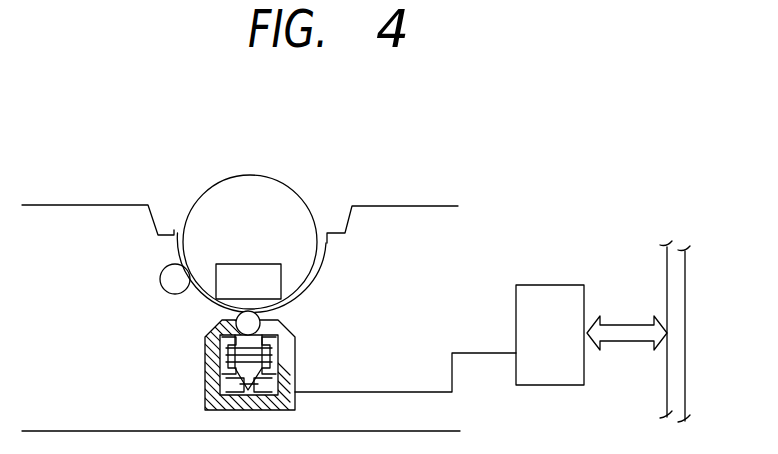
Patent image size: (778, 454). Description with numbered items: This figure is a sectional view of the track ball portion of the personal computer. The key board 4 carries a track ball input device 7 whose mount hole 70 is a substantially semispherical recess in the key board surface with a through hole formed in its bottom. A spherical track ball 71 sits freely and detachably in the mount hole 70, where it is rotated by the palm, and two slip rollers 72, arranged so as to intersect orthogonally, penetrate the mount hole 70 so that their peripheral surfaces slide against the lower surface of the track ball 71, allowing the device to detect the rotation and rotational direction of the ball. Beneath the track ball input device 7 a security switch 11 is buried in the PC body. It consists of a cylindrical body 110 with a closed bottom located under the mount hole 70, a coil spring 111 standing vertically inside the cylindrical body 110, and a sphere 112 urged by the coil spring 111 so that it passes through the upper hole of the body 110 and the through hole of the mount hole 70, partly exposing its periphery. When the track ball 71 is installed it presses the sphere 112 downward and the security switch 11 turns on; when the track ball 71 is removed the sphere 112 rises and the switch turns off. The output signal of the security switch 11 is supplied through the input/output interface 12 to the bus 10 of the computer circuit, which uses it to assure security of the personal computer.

The key board 4 is at (430, 206).
The track ball input device 7 is at (273, 196).
The mount hole 70 is at (178, 233).
The track ball 71 is at (243, 174).
The slip rollers 72 is at (172, 283).
The bus 10 is at (686, 291).
The security switch 11 is at (243, 364).
The input/output interface 12 is at (558, 297).
The cylindrical body 110 is at (262, 408).
The coil spring 111 is at (278, 357).
The sphere 112 is at (258, 321).